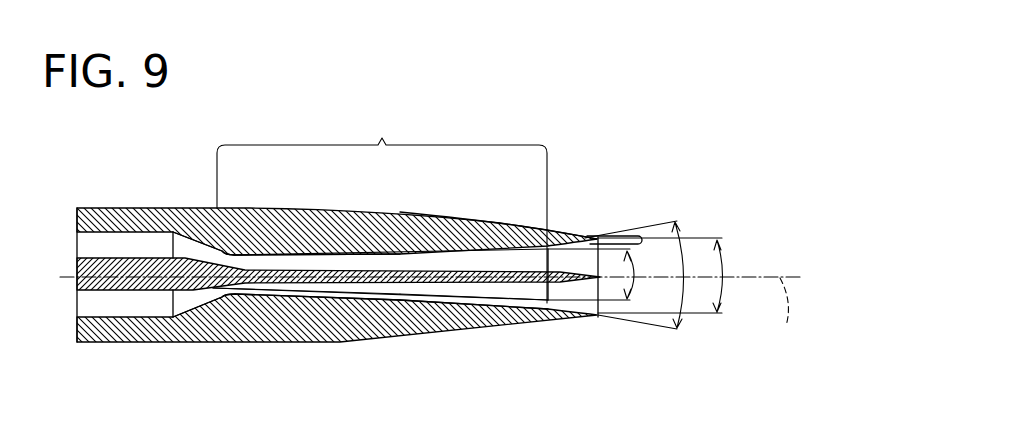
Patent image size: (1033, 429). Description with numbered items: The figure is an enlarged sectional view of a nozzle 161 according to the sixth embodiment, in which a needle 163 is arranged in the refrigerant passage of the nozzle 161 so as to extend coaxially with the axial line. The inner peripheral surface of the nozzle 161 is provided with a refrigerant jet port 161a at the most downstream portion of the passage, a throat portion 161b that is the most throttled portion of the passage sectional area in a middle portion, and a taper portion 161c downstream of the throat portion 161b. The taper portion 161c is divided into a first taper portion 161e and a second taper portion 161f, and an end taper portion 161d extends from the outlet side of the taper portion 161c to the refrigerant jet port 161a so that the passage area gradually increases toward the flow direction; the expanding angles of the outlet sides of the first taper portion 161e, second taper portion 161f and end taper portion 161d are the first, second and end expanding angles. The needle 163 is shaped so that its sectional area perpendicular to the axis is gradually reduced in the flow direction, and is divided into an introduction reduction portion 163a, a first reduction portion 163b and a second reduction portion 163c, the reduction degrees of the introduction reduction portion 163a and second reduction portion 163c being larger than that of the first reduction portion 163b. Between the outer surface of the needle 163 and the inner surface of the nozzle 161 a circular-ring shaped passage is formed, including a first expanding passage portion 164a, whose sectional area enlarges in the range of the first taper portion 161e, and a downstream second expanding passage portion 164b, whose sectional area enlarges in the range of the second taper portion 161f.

The nozzle 161 is at (591, 139).
The refrigerant jet port 161a is at (603, 238).
The throat portion 161b is at (212, 254).
The taper portion 161c is at (382, 205).
The end taper portion 161d is at (652, 237).
The first taper portion 161e is at (310, 255).
The second taper portion 161f is at (507, 222).
The needle 163 is at (141, 268).
The introduction reduction portion 163a is at (238, 296).
The first reduction portion 163b is at (313, 296).
The second reduction portion 163c is at (408, 296).
The first expanding passage portion 164a is at (372, 289).
The second expanding passage portion 164b is at (487, 249).